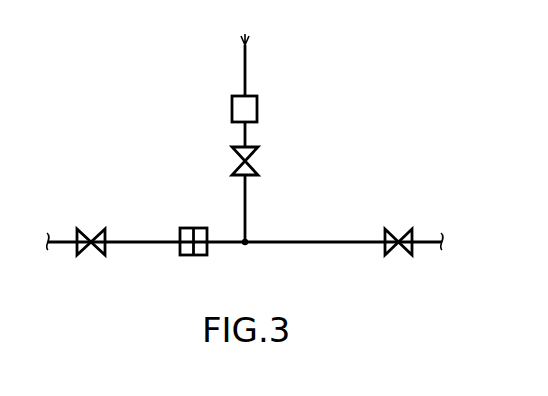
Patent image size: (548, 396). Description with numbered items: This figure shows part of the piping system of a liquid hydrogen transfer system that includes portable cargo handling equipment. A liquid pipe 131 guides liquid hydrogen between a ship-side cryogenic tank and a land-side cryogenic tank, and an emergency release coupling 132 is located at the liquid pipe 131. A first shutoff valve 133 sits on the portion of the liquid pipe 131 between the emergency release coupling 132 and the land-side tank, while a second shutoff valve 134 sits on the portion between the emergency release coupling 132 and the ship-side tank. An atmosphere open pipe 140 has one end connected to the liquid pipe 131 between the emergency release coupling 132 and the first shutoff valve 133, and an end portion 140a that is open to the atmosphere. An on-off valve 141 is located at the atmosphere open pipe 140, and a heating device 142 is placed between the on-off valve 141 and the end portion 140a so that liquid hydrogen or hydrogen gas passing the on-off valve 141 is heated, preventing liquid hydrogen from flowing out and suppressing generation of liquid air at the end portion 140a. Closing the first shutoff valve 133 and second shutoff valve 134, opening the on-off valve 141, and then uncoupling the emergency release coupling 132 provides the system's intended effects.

The liquid pipe 131 is at (142, 242).
The emergency release coupling 132 is at (191, 228).
The first shutoff valve 133 is at (398, 229).
The second shutoff valve 134 is at (89, 229).
The atmosphere open pipe 140 is at (245, 60).
The end portion 140a is at (243, 42).
The on-off valve 141 is at (258, 161).
The heating device 142 is at (257, 95).